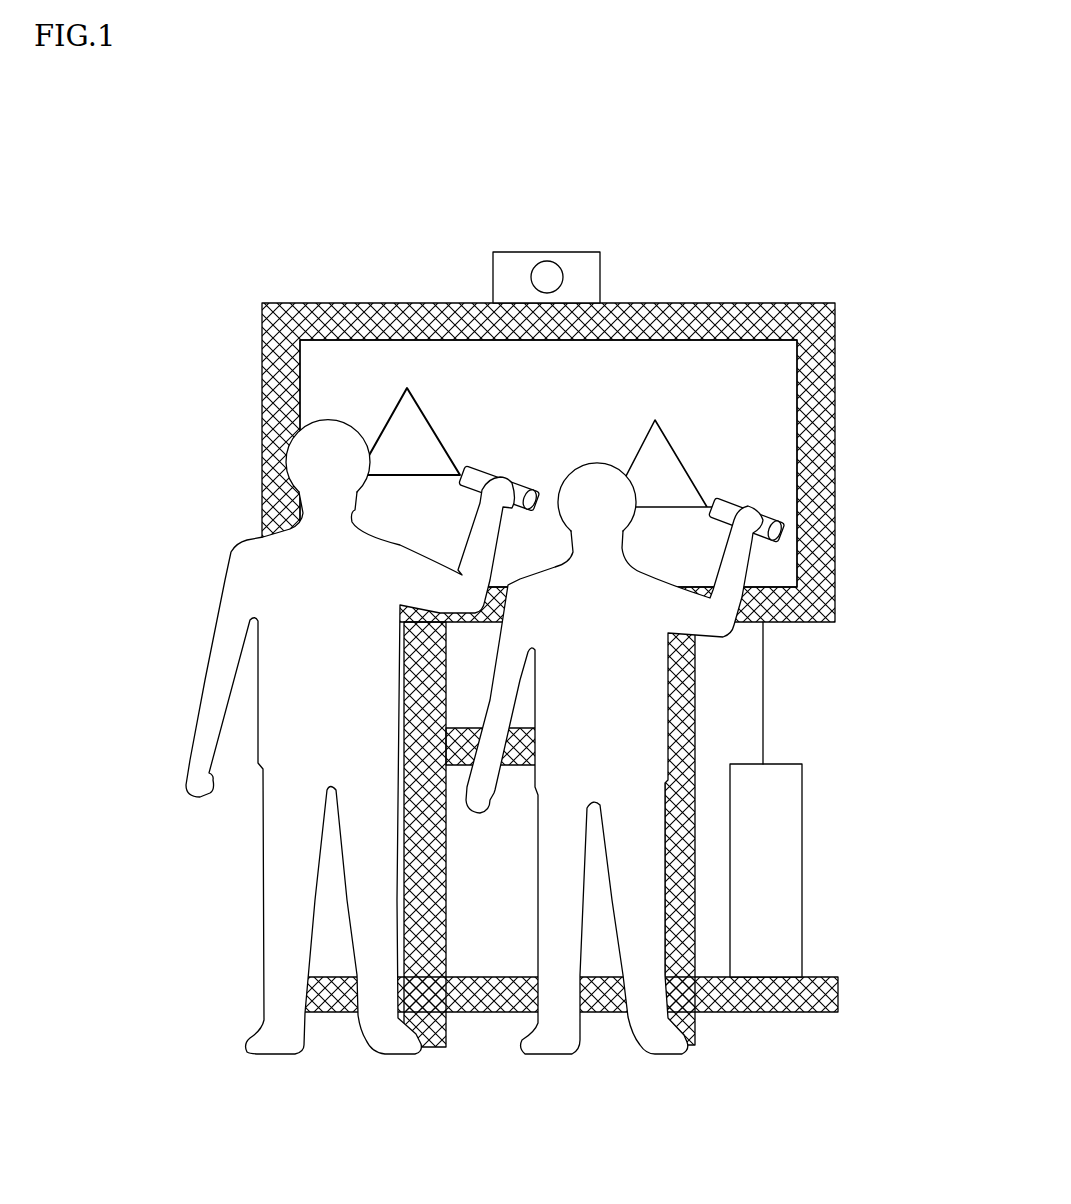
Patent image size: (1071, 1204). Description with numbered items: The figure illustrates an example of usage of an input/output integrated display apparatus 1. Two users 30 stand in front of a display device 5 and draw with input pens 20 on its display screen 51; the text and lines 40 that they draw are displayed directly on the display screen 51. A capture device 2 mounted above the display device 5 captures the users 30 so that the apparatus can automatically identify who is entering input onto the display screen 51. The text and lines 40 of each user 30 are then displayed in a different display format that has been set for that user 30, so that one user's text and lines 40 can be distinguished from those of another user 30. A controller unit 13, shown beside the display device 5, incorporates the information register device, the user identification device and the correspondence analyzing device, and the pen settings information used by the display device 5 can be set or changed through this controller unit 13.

The input/output integrated display apparatus 1 is at (807, 172).
The capture device 2 is at (600, 265).
The display device 5 is at (589, 461).
The display screen 51 is at (785, 403).
The controller unit 13 is at (803, 830).
The input pen 20 is at (527, 483).
The user 30 is at (205, 650).
The text and lines 40 is at (430, 417).